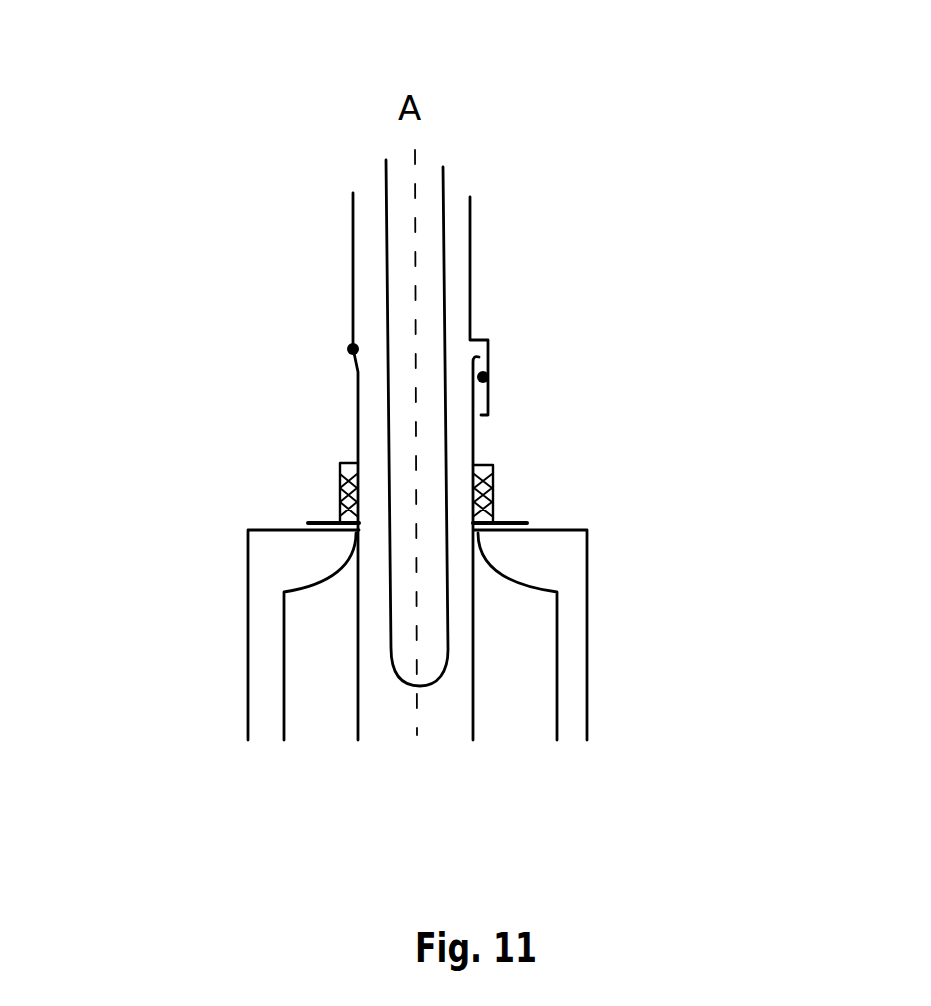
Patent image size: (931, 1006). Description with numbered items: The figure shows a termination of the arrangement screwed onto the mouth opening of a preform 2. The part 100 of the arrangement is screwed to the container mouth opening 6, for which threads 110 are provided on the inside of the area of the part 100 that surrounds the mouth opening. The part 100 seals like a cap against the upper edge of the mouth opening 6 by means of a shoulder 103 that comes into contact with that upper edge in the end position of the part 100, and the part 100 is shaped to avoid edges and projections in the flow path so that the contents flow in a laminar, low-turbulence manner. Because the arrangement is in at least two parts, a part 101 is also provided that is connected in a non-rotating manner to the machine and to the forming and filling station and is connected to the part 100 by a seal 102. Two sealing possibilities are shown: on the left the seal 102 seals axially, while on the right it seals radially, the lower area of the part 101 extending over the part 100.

The housing 2 is at (476, 666).
The container mouth opening 6 is at (343, 490).
The part of the arrangement 100 is at (353, 425).
The part connected to the machine 101 is at (344, 250).
The seal 102 is at (348, 350).
The shoulder 103 is at (338, 462).
The threads 110 is at (493, 491).